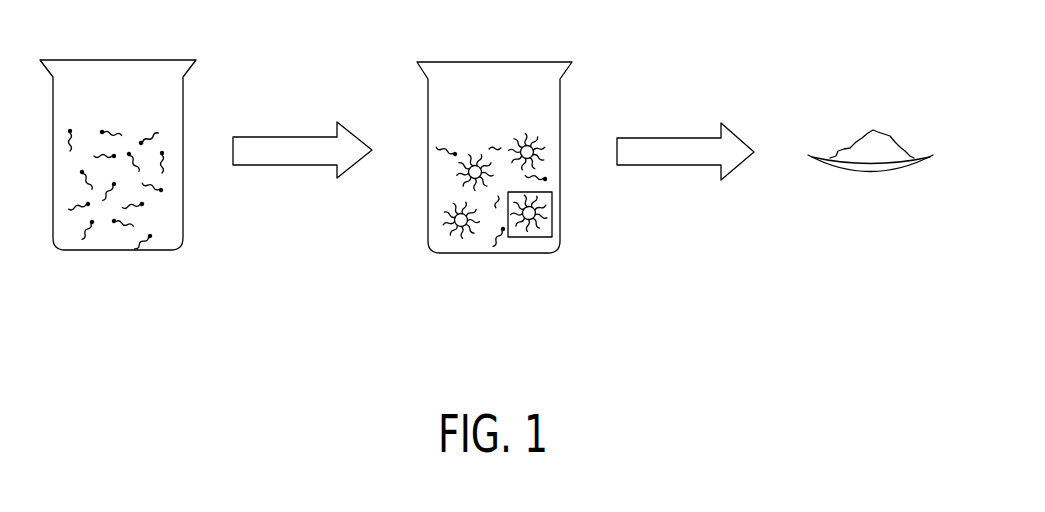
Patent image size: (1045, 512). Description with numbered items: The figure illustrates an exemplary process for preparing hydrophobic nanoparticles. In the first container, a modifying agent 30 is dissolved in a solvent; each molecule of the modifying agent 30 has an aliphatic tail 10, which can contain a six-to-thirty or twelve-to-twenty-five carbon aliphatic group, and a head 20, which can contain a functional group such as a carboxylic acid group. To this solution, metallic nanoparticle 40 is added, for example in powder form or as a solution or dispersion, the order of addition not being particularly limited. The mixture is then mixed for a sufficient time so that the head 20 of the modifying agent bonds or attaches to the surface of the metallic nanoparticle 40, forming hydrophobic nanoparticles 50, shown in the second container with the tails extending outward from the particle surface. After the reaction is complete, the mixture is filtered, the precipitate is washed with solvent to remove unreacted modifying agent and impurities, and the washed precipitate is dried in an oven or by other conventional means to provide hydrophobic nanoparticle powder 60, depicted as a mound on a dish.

The aliphatic tail 10 is at (165, 227).
The head 20 is at (116, 219).
The modifying agent 30 is at (120, 219).
The metallic nanoparticle 40 is at (456, 237).
The hydrophobic nanoparticles 50 is at (532, 242).
The hydrophobic nanoparticle powder 60 is at (887, 155).